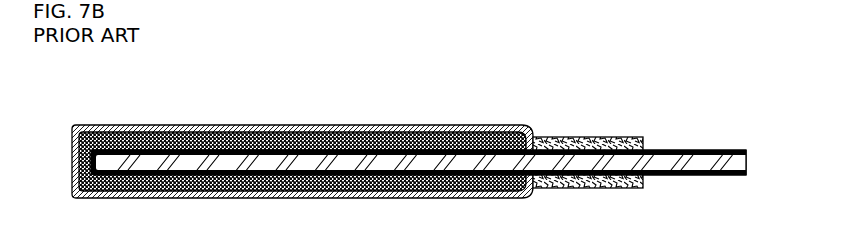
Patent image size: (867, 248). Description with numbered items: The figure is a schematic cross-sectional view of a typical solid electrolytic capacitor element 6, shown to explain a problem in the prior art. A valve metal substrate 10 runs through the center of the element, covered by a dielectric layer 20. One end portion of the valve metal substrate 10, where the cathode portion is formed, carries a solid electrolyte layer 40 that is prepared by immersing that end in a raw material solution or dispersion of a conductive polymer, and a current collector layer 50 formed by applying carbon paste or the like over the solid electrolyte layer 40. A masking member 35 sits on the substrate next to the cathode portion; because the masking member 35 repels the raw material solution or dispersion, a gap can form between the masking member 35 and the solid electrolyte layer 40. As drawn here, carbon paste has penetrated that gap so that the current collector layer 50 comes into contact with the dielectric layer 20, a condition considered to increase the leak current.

The solid electrolytic capacitor element 6 is at (412, 115).
The valve metal substrate 10 is at (700, 150).
The dielectric layer 20 is at (468, 152).
The masking member 35 is at (575, 137).
The solid electrolyte layer 40 is at (342, 138).
The current collector layer 50 is at (127, 125).